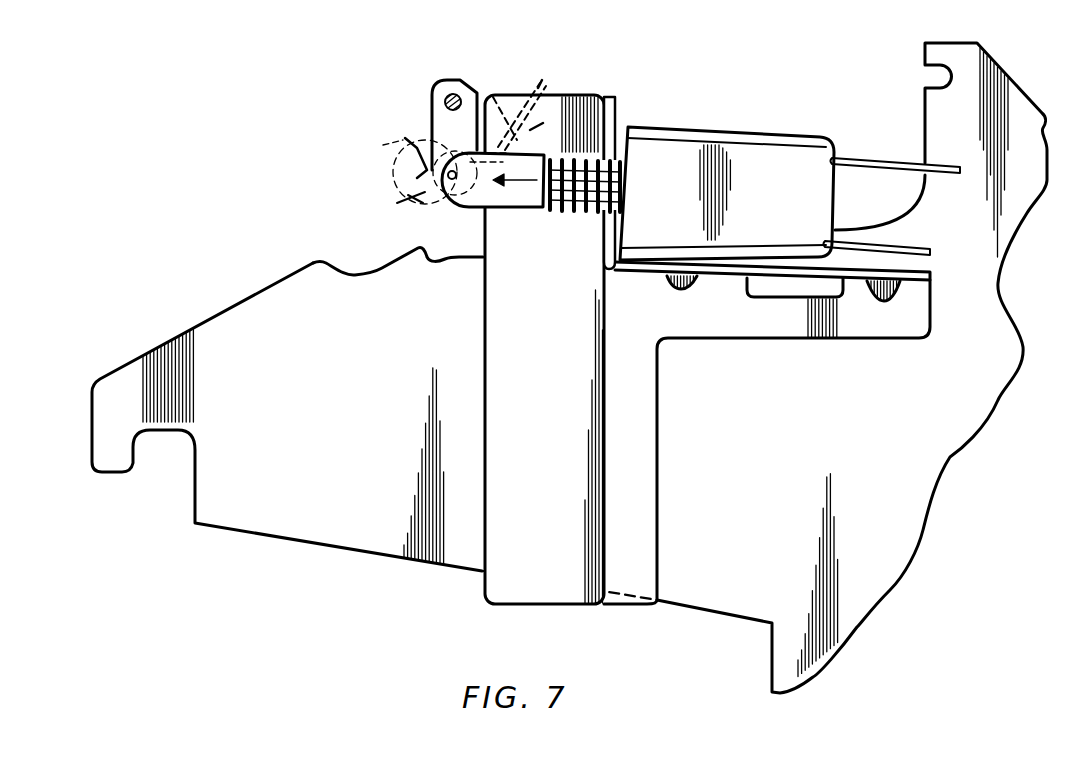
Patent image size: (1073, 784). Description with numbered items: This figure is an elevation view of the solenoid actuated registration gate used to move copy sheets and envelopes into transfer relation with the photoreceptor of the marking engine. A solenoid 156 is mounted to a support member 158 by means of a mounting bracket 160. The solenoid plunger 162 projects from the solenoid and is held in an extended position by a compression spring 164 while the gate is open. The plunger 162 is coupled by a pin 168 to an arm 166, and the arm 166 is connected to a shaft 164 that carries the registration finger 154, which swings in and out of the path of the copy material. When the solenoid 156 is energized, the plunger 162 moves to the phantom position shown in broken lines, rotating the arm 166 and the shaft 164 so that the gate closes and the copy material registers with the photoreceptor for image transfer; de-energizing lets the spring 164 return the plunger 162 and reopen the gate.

The registration finger 154 is at (541, 84).
The solenoid 156 is at (786, 133).
The support member 158 is at (925, 532).
The mounting bracket 160 is at (502, 343).
The solenoid plunger 162 is at (573, 198).
The compression spring 164 is at (613, 150).
The arm 166 is at (437, 126).
The pin 168 is at (438, 183).